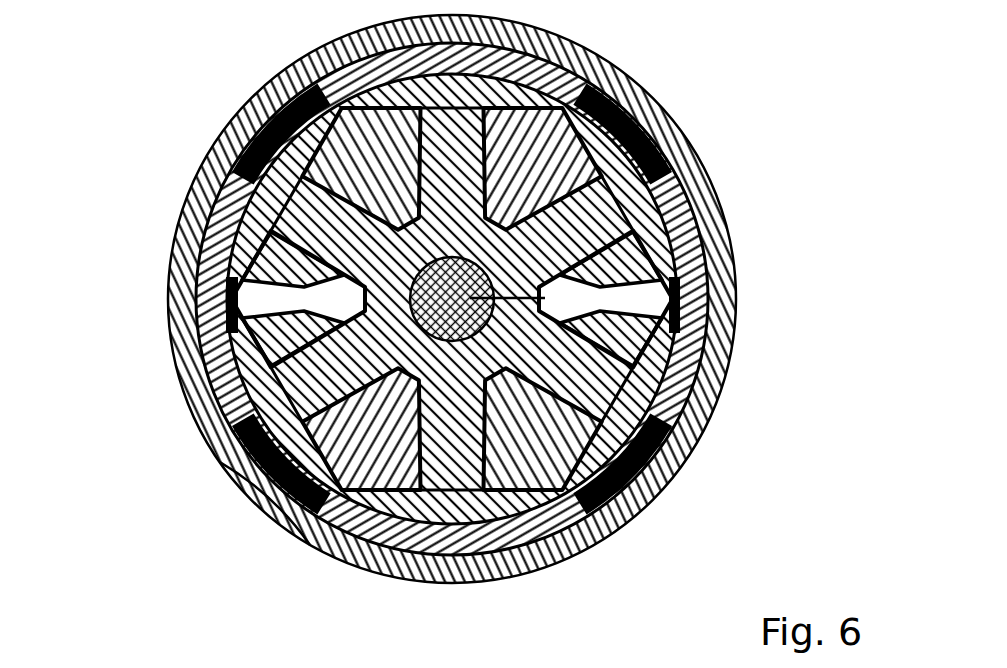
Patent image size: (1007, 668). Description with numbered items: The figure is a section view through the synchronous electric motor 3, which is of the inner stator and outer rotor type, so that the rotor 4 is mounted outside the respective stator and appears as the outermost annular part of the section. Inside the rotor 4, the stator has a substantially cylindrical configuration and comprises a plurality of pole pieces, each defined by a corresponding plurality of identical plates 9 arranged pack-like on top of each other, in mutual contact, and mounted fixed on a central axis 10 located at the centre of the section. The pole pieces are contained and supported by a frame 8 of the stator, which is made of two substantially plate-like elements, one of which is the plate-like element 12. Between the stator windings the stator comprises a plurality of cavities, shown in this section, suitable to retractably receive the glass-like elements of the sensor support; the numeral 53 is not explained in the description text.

The synchronous electric motor 3 is at (123, 110).
The rotor 4 is at (665, 118).
The frame 8 is at (703, 212).
The plates 9 is at (260, 507).
The central axis 10 is at (440, 299).
The plate-like element 12 is at (585, 372).
The stator winding 53 is at (636, 297).